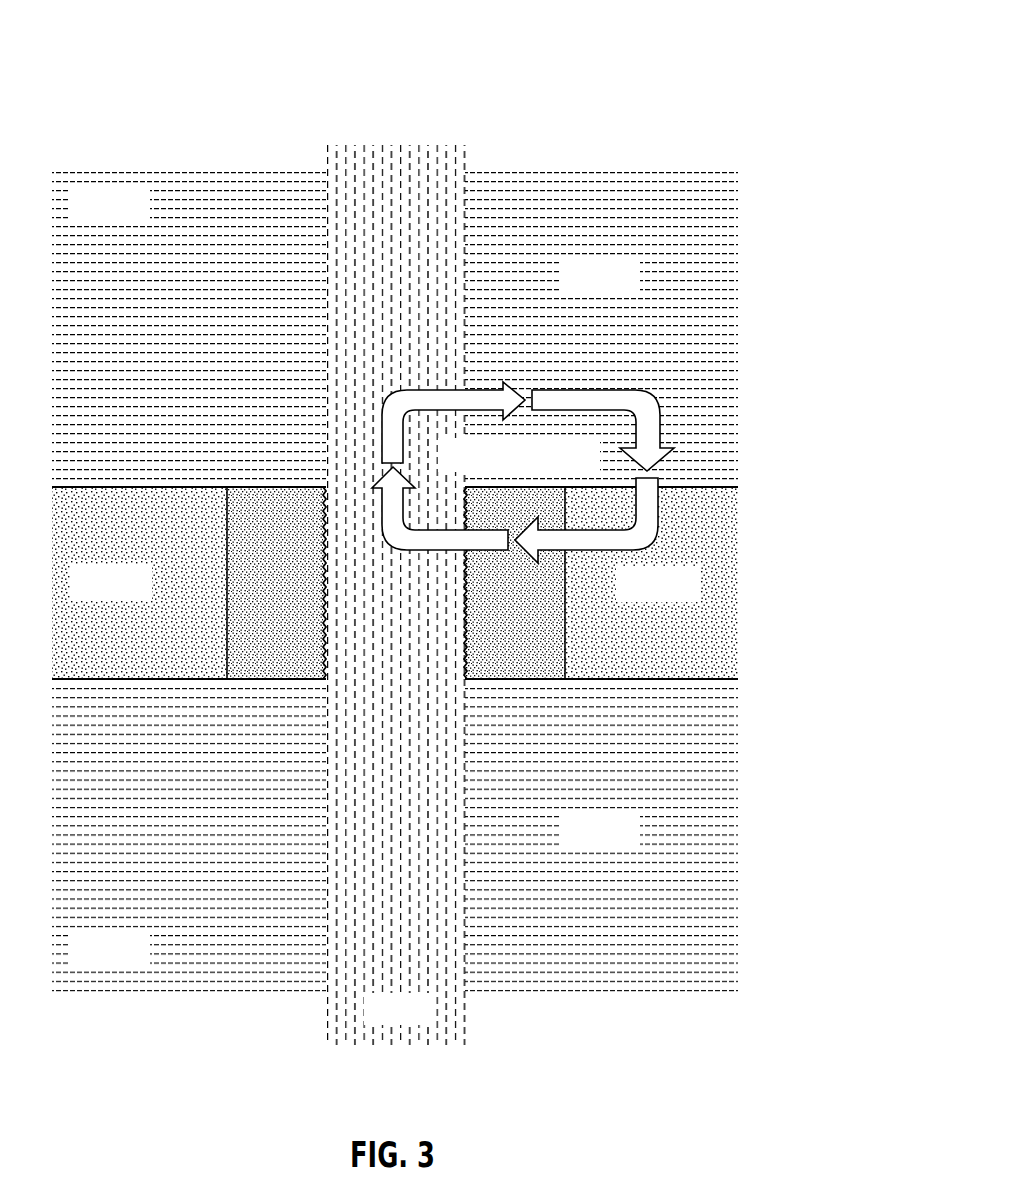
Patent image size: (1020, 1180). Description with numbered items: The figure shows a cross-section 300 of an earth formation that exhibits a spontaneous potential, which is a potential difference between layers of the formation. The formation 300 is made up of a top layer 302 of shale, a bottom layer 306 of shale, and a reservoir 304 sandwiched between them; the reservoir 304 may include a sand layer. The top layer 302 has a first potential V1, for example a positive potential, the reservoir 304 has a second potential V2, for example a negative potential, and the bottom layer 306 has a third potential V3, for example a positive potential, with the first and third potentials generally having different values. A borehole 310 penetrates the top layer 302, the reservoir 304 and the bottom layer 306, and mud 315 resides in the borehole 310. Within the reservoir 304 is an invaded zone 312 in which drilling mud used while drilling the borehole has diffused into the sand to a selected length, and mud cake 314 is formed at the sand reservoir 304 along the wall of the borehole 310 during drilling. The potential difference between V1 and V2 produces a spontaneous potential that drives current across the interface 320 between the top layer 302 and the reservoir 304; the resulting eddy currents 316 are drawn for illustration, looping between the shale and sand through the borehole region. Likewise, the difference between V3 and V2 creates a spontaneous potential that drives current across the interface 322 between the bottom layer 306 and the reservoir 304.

The cross-section of formation 300 is at (498, 49).
The top layer 302 is at (725, 222).
The reservoir 304 is at (434, 582).
The bottom layer 306 is at (727, 830).
The borehole 310 is at (404, 579).
The invaded zone 312 is at (263, 505).
The mud cake 314 is at (319, 657).
The mud 315 is at (457, 1010).
The eddy currents 316 is at (478, 390).
The interface 320 is at (735, 486).
The interface 322 is at (728, 678).